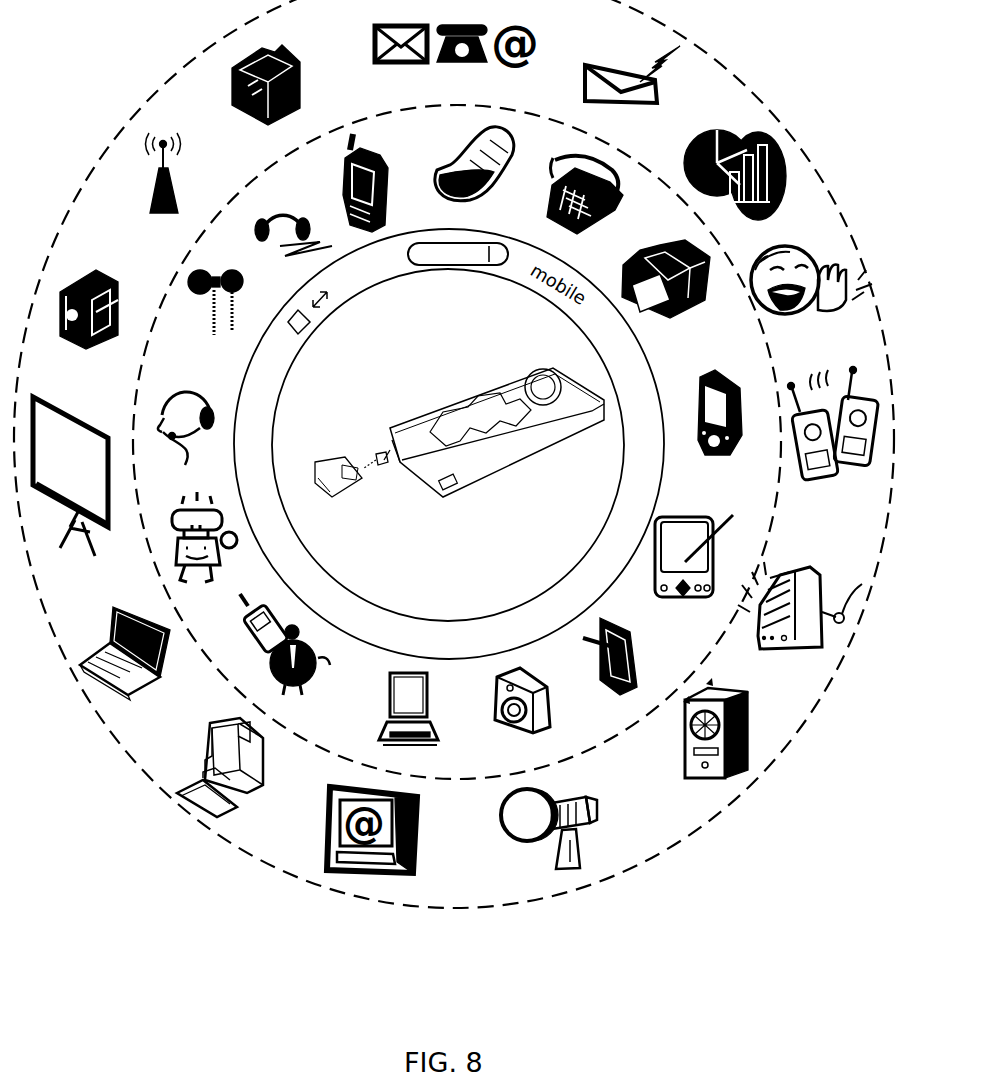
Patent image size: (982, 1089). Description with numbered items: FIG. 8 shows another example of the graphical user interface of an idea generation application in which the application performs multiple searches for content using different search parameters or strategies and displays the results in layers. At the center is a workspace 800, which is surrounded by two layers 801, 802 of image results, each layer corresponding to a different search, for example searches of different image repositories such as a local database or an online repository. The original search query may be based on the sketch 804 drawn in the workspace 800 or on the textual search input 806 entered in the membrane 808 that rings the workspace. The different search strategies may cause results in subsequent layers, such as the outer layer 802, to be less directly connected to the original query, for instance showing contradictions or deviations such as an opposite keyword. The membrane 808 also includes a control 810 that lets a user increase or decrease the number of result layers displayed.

The workspace 800 is at (449, 444).
The first layer of image results 801 is at (588, 695).
The second layer of image results 802 is at (540, 884).
The sketch 804 is at (486, 394).
The textual search input 806 is at (447, 265).
The membrane 808 is at (349, 618).
The control 810 is at (319, 307).